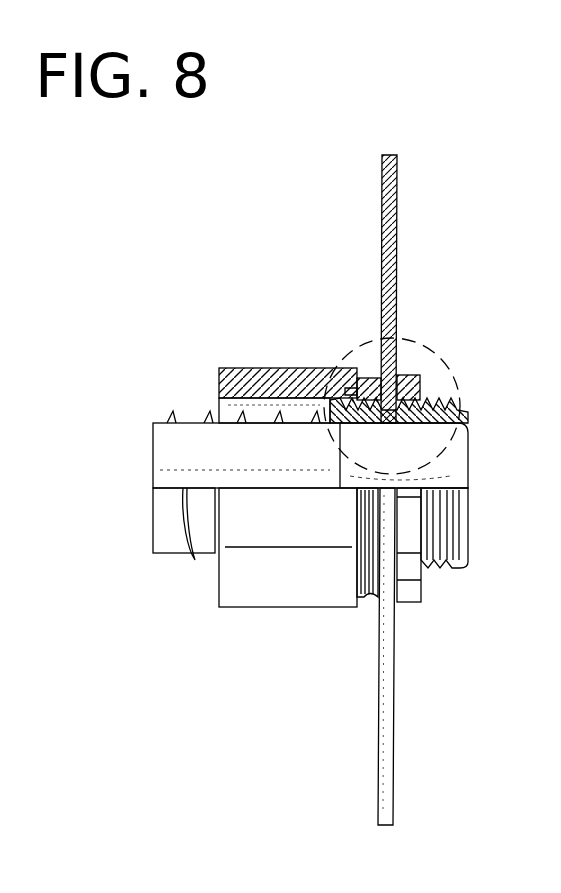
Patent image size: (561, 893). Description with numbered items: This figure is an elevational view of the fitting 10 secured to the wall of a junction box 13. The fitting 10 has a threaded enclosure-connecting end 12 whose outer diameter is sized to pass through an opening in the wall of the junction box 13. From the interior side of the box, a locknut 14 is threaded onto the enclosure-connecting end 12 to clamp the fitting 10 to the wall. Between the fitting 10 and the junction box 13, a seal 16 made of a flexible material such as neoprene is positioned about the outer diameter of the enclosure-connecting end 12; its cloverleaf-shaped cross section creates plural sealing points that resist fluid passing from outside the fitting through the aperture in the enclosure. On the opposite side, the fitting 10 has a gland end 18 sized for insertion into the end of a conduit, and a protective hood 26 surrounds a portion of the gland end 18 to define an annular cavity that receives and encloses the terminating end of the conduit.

The fitting 10 is at (160, 252).
The threaded enclosure-connecting end 12 is at (466, 568).
The junction box 13 is at (396, 183).
The locknut 14 is at (408, 603).
The seal 16 is at (370, 387).
The gland end 18 is at (165, 557).
The protective hood 26 is at (252, 610).